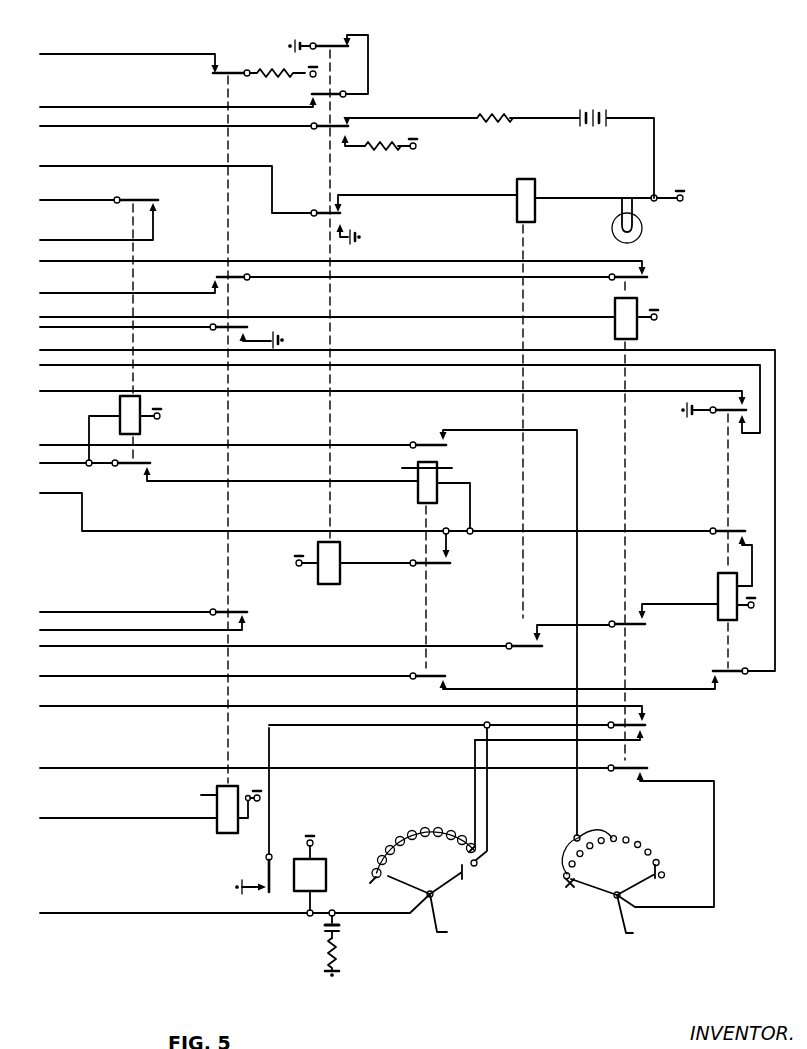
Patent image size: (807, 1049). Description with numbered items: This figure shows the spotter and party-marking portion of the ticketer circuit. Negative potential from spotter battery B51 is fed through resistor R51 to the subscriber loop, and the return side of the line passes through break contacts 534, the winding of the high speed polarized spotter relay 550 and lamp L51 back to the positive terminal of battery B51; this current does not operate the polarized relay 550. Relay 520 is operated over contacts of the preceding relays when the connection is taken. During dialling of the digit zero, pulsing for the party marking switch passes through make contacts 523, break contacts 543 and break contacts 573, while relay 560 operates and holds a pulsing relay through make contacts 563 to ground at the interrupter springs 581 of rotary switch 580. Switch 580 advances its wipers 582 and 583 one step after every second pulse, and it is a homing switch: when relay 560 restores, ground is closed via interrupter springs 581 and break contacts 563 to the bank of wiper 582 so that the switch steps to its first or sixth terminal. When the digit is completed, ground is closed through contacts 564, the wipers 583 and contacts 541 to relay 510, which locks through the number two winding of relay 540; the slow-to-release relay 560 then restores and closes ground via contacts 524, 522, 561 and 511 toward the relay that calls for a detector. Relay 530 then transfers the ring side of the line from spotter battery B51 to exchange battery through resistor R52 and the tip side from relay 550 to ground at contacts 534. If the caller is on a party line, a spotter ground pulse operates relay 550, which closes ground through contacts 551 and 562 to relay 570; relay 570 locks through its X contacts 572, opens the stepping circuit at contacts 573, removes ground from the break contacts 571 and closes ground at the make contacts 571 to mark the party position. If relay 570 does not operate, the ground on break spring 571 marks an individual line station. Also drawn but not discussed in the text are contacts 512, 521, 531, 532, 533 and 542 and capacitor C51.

The relay 510 is at (143, 423).
The contacts 511 is at (155, 205).
The relay contact 512 is at (138, 468).
The relay 520 is at (213, 822).
The relay contact 521 is at (214, 71).
The contacts 522 is at (215, 276).
The make contacts 523 is at (250, 619).
The contacts 524 is at (238, 333).
The relay 530 is at (343, 575).
The relay contact 531 is at (348, 42).
The relay contact 532 is at (310, 97).
The relay transfer contact 533 is at (338, 140).
The break contacts 534 is at (336, 211).
The relay 540 is at (416, 500).
The contacts 541 is at (438, 437).
The relay contact 542 is at (452, 557).
The break contacts 543 is at (452, 681).
The polarized spotter relay 550 is at (517, 212).
The contacts 551 is at (525, 632).
The relay 560 is at (612, 300).
The contacts 561 is at (649, 275).
The contacts 562 is at (648, 622).
The make and break contacts 563 is at (651, 722).
The contacts 564 is at (652, 773).
The relay 570 is at (718, 583).
The break make contacts 571 is at (733, 420).
The X contacts 572 is at (735, 538).
The break contacts 573 is at (707, 677).
The rotary switch 580 is at (328, 838).
The interrupter springs 581 is at (263, 872).
The wiper 582 is at (423, 880).
The wiper 583 is at (613, 881).
The resistor R51 is at (513, 98).
The resistor R52 is at (374, 147).
The spotter battery B51 is at (615, 98).
The lamp L51 is at (642, 233).
The capacitor C51 is at (340, 930).